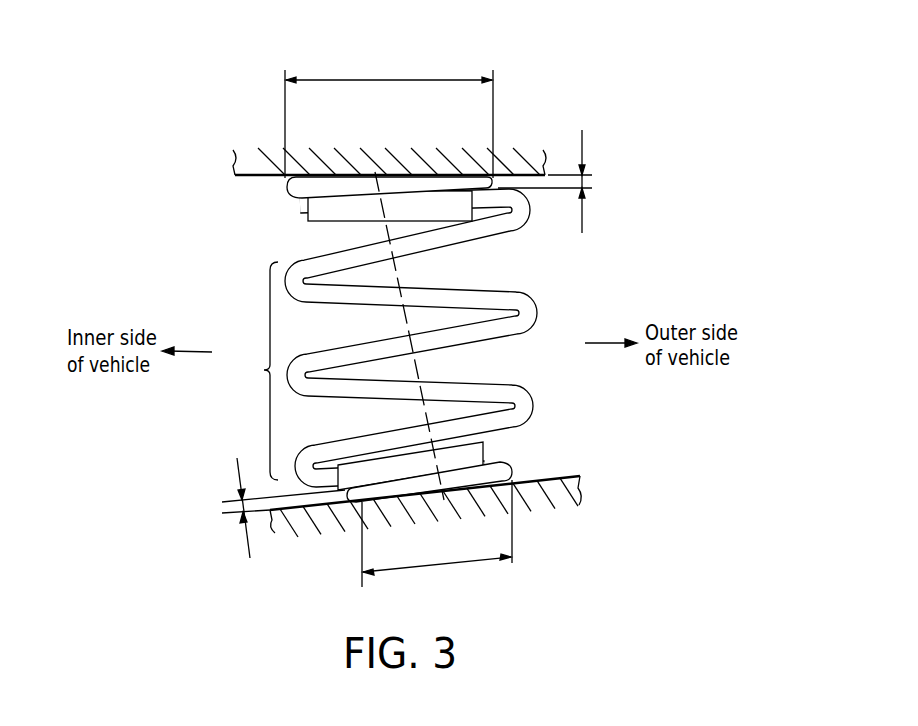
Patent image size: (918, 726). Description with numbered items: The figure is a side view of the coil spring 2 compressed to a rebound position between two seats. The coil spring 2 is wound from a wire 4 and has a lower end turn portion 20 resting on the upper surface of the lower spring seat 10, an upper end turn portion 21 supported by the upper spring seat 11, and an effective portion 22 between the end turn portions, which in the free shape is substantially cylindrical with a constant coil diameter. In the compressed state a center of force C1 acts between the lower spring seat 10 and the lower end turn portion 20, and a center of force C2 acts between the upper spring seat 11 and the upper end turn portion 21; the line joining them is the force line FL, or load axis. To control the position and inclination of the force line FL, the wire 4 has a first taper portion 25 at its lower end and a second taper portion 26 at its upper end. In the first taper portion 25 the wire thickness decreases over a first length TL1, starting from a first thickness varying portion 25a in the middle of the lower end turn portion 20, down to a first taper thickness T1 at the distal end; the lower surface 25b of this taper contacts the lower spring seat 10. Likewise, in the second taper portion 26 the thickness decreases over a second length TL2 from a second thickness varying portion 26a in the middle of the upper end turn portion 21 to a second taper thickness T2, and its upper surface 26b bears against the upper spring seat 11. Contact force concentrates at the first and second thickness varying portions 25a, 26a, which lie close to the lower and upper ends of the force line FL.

The coil spring 2 is at (577, 263).
The wire 4 is at (493, 396).
The lower spring seat 10 is at (570, 476).
The upper spring seat 11 is at (250, 178).
The lower end turn portion 20 is at (503, 464).
The upper end turn portion 21 is at (298, 185).
The effective portion 22 is at (258, 371).
The first taper portion 25 is at (403, 478).
The first thickness varying portion 25a is at (507, 487).
The lower surface of the first taper portion 25b is at (478, 489).
The second taper portion 26 is at (437, 192).
The second thickness varying portion 26a is at (290, 176).
The upper surface of the second taper portion 26b is at (441, 177).
The force line FL is at (402, 317).
The center of force applied to the lower end turn portion C1 is at (443, 498).
The center of force applied to the upper end turn portion C2 is at (376, 174).
The first taper thickness T1 is at (238, 510).
The second taper thickness T2 is at (584, 181).
The first length TL1 is at (437, 572).
The second length TL2 is at (385, 79).